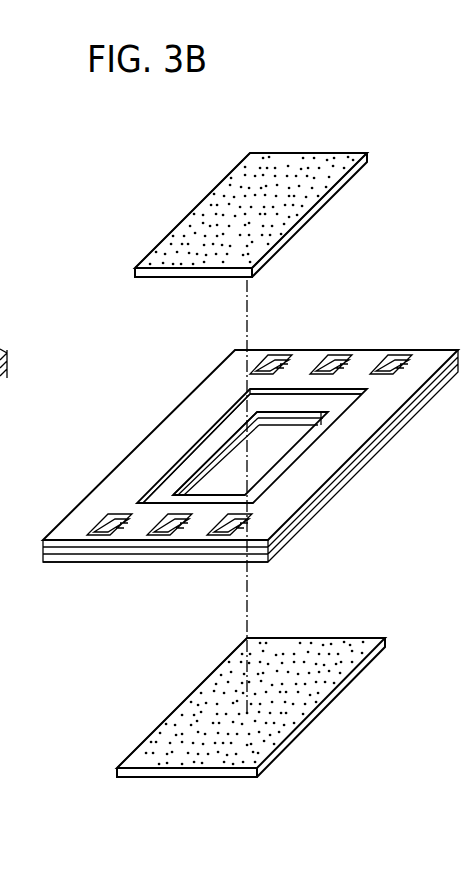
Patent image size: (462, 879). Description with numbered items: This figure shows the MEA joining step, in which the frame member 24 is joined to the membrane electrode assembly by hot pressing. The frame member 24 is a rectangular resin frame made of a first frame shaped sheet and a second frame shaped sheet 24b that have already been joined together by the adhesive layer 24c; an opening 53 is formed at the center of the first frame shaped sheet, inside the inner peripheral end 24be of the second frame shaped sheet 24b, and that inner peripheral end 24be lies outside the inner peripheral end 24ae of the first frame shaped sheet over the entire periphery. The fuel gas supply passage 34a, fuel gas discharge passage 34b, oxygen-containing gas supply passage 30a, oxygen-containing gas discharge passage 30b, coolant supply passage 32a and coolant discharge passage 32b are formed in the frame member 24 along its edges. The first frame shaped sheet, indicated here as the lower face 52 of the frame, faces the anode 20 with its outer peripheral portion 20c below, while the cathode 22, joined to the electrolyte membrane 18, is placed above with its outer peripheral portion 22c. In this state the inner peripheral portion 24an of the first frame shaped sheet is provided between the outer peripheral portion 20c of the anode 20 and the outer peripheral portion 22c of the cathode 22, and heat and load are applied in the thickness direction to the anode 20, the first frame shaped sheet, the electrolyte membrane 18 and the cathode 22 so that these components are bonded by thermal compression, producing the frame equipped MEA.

The electrolyte membrane 18 is at (292, 187).
The anode 20 is at (277, 753).
The outer peripheral portion of the anode 20c is at (160, 733).
The cathode 22 is at (223, 180).
The outer peripheral portion of the cathode 22c is at (170, 240).
The frame member 24 is at (171, 390).
The inner peripheral end of the first frame shaped sheet 24ae is at (233, 435).
The inner peripheral portion of the first frame shaped sheet 24an is at (168, 487).
The second frame shaped sheet 24b is at (118, 480).
The inner peripheral end of the second frame shaped sheet 24be is at (303, 388).
The adhesive layer 24c is at (240, 418).
The oxygen-containing gas supply passage 30a is at (110, 533).
The oxygen-containing gas discharge passage 30b is at (396, 357).
The coolant supply passage 32a is at (171, 533).
The coolant discharge passage 32b is at (337, 357).
The fuel gas supply passage 34a is at (275, 357).
The fuel gas discharge passage 34b is at (231, 533).
The bottom surface (24a) 52 is at (64, 566).
The opening 53 is at (202, 470).